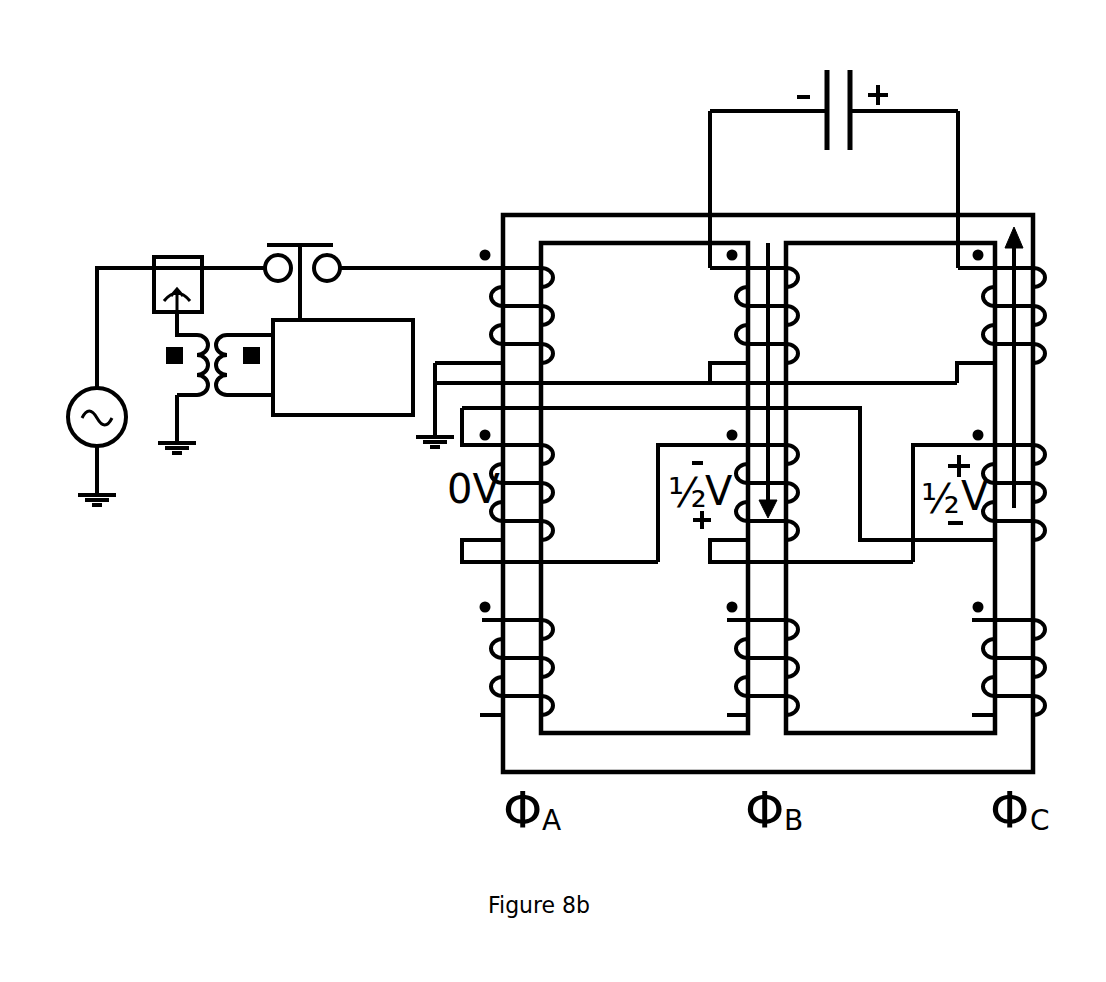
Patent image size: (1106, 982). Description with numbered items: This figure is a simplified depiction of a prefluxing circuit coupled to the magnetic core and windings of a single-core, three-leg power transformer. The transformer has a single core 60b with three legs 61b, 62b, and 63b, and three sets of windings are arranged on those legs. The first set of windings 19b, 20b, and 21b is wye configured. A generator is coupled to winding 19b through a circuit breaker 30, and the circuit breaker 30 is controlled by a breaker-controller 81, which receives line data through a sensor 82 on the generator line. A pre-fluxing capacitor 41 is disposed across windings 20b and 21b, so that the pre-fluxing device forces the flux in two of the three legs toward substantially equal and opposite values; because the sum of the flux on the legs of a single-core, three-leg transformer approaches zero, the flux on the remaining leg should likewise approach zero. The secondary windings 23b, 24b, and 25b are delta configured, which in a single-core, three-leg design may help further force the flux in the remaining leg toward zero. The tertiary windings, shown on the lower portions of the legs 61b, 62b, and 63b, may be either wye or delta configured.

The sensor 82 is at (172, 257).
The circuit breaker 30 is at (300, 243).
The breaker-controller 81 is at (318, 415).
The single core 60b is at (568, 213).
The pre-fluxing capacitor 41 is at (852, 80).
The first-set winding 19b is at (553, 272).
The first-set winding 20b is at (797, 272).
The first-set winding 21b is at (1045, 272).
The secondary winding 23b is at (552, 513).
The secondary winding 24b is at (797, 490).
The secondary winding 25b is at (1040, 453).
The leg 61b is at (530, 585).
The leg 62b is at (780, 585).
The leg 63b is at (1002, 557).